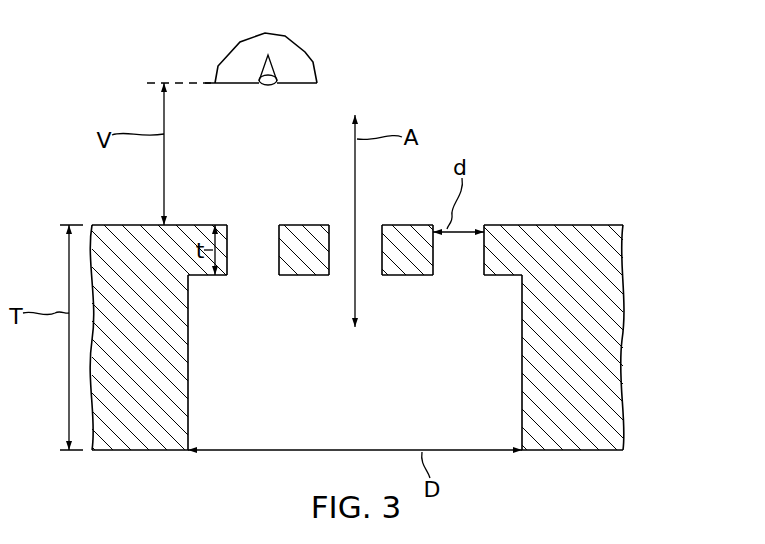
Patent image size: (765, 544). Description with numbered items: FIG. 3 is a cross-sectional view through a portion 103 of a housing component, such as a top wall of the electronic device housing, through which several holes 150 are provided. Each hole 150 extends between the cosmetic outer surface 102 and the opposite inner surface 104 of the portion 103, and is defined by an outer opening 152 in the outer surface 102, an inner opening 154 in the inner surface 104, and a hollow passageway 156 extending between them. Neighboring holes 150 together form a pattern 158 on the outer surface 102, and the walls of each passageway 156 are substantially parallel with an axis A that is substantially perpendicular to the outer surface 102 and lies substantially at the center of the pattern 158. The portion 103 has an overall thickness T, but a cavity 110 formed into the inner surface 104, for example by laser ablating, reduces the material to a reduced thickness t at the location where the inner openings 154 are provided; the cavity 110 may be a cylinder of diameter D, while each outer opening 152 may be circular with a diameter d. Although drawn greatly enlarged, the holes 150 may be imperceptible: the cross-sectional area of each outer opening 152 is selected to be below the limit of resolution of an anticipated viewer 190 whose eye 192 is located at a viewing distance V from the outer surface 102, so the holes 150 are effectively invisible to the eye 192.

The outer surface 102 is at (108, 225).
The inner surface 104 is at (203, 277).
The cavity 110 is at (343, 438).
The hole 150 is at (262, 200).
The outer opening 152 is at (248, 232).
The inner opening 154 is at (254, 278).
The hollow passageway 156 is at (235, 267).
The pattern 158 is at (406, 166).
The viewer 190 is at (223, 44).
The eye 192 is at (271, 65).
The portion of housing component 103 is at (561, 93).